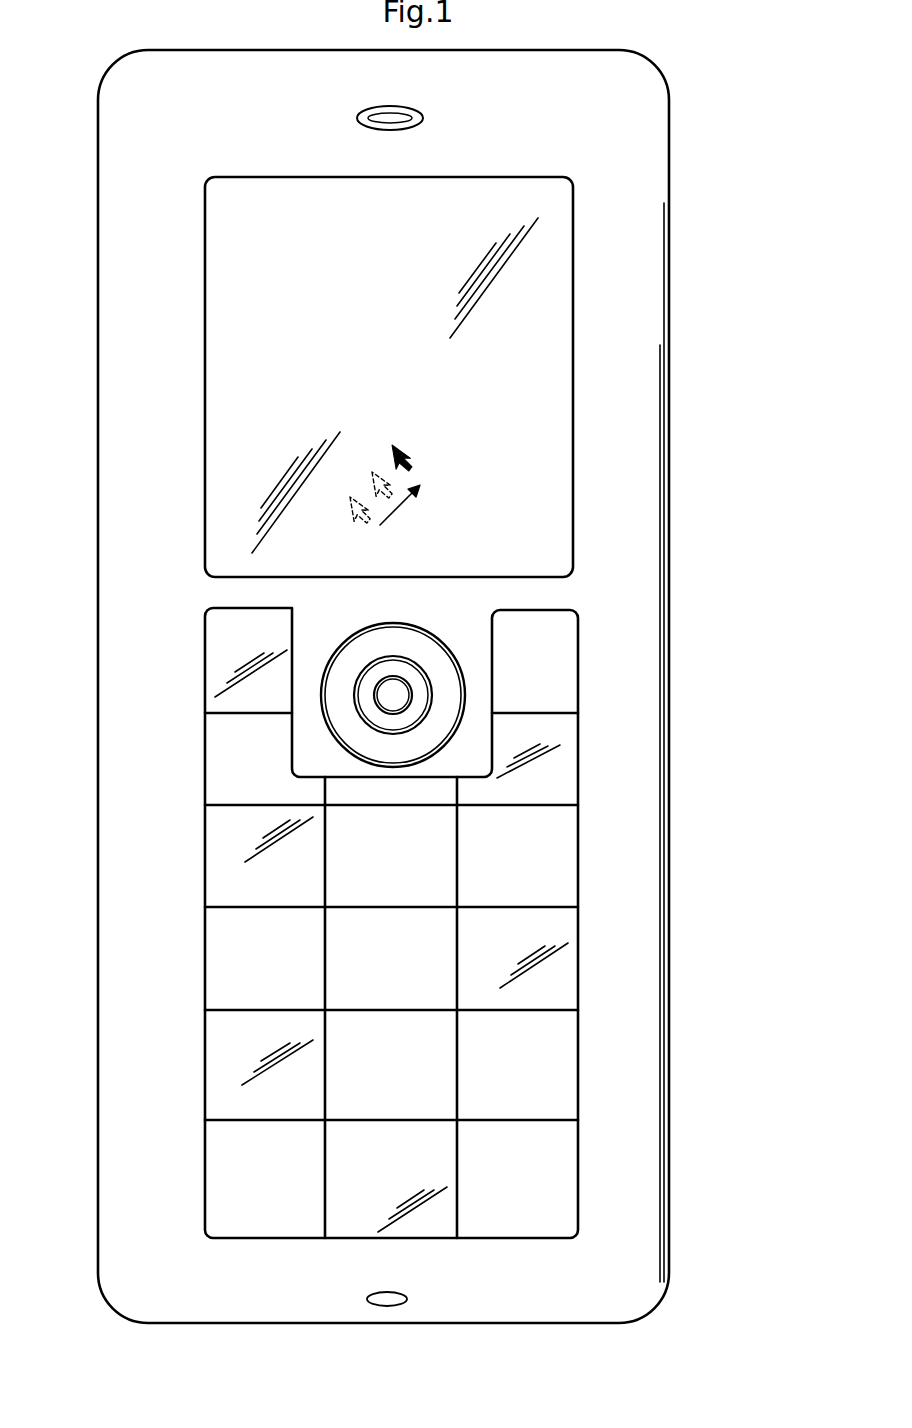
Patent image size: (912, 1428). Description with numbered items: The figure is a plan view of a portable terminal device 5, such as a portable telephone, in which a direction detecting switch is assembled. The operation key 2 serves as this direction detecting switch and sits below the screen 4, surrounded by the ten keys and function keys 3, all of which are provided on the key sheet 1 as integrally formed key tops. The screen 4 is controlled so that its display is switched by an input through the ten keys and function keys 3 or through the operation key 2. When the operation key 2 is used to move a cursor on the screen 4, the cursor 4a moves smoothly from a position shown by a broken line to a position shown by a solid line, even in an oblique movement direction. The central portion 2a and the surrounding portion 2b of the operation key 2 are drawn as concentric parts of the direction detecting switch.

The key sheet 1 is at (580, 852).
The operation key 2 is at (447, 638).
The center key of rotary dial 2a is at (393, 695).
The rotating ring of rotary dial 2b is at (350, 657).
The ten keys and function keys 3 is at (215, 752).
The screen 4 is at (550, 324).
The cursor 4a is at (410, 465).
The portable terminal device 5 is at (683, 150).